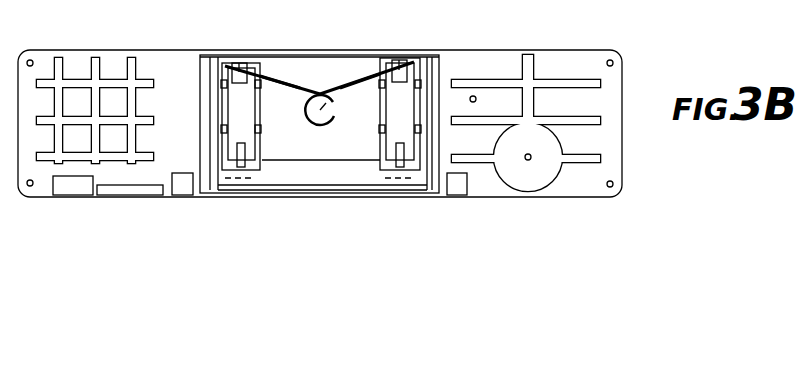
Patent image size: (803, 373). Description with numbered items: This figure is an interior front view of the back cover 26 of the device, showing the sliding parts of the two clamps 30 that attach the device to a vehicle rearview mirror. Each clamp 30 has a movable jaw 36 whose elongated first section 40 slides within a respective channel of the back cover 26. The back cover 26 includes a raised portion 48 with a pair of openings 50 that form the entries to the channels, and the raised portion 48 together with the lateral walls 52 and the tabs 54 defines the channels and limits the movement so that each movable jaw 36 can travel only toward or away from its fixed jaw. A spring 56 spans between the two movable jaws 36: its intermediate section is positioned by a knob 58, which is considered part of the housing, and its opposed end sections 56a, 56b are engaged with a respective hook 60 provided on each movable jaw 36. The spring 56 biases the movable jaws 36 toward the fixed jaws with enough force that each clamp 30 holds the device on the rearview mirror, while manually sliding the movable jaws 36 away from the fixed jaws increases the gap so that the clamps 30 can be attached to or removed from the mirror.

The back cover 26 is at (620, 95).
The clamp 30 is at (218, 82).
The movable jaw 36 is at (238, 128).
The first section 40 is at (260, 267).
The raised portion 48 is at (577, 363).
The openings 50 is at (201, 0).
The lateral walls 52 is at (254, 122).
The tabs 54 is at (258, 82).
The spring 56 is at (310, 90).
The end section 56a is at (330, 84).
The end section 56b is at (380, 70).
The knob 58 is at (315, 122).
The hook 60 is at (242, 70).